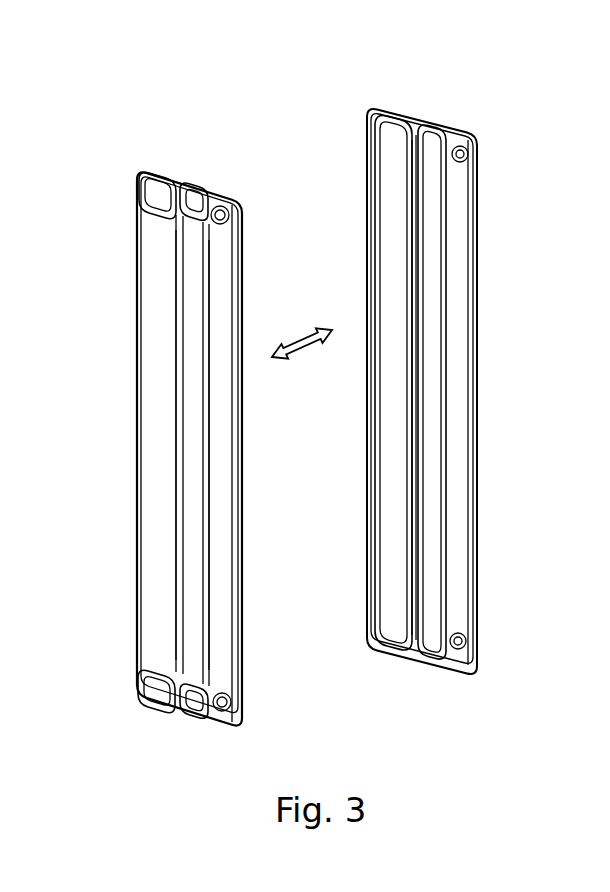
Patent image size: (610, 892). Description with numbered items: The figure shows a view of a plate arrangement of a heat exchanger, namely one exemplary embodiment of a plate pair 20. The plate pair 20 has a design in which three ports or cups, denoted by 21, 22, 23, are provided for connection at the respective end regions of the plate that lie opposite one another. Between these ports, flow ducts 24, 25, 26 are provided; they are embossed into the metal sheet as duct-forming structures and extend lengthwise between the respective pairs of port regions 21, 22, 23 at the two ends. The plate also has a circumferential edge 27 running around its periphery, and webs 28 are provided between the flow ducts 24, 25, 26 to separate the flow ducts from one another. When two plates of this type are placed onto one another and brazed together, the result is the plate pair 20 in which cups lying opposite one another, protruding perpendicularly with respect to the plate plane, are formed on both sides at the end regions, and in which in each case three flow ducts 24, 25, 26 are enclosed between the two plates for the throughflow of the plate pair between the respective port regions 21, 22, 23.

The plate pair 20 is at (217, 148).
The port 21 is at (152, 189).
The port 22 is at (193, 183).
The port 23 is at (228, 204).
The flow duct 24 is at (148, 418).
The flow duct 25 is at (192, 382).
The flow duct 26 is at (222, 480).
The circumferential edge 27 is at (473, 318).
The web 28 is at (420, 223).